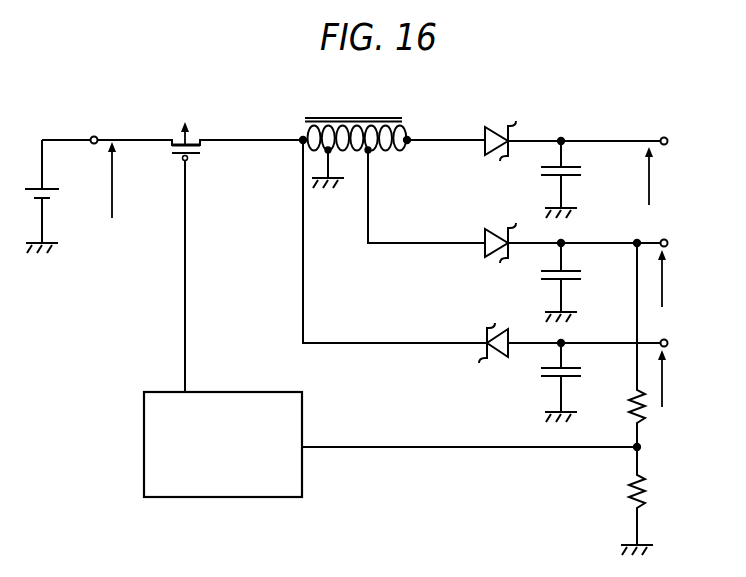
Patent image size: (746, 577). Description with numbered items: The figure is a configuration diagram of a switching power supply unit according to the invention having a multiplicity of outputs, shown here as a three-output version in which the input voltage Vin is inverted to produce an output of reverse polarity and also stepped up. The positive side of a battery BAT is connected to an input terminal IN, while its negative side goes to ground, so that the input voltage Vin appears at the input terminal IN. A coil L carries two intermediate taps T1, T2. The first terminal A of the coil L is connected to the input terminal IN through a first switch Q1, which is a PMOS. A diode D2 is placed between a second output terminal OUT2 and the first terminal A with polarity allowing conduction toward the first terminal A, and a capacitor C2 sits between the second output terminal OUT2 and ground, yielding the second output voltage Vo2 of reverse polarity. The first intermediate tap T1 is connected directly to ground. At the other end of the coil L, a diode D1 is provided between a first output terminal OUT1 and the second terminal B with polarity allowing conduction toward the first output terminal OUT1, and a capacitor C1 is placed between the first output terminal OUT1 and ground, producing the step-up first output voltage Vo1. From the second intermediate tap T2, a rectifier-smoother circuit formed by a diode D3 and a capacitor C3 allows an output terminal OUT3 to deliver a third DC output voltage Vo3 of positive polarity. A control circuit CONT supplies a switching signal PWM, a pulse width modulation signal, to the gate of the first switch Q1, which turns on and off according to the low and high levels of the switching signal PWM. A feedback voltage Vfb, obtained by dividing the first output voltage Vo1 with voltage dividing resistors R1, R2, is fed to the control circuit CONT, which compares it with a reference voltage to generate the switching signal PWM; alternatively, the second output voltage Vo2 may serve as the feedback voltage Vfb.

The battery BAT is at (55, 196).
The input terminal IN is at (94, 129).
The input voltage Vin is at (127, 180).
The first switch Q1 is at (186, 246).
The first terminal A is at (296, 129).
The second terminal B is at (415, 129).
The coil having intermediate taps L is at (355, 124).
The first intermediate tap T1 is at (336, 167).
The second intermediate tap T2 is at (382, 159).
The diode D1 is at (500, 132).
The diode D2 is at (496, 331).
The diode D3 is at (500, 232).
The capacitor C1 is at (576, 178).
The capacitor C2 is at (576, 381).
The capacitor C3 is at (576, 281).
The first output terminal OUT1 is at (693, 145).
The second output terminal OUT2 is at (693, 346).
The output terminal OUT3 is at (693, 246).
The first output voltage Vo1 is at (667, 176).
The second output voltage Vo2 is at (680, 378).
The third DC output voltage Vo3 is at (680, 278).
The voltage dividing resistor R1 is at (621, 344).
The voltage dividing resistor R2 is at (625, 500).
The control circuit CONT is at (302, 417).
The switching signal PWM is at (211, 380).
The feedback voltage Vfb is at (450, 433).